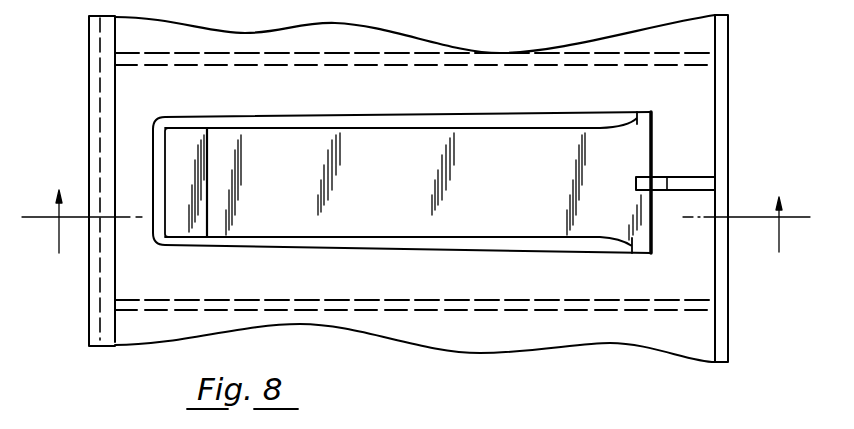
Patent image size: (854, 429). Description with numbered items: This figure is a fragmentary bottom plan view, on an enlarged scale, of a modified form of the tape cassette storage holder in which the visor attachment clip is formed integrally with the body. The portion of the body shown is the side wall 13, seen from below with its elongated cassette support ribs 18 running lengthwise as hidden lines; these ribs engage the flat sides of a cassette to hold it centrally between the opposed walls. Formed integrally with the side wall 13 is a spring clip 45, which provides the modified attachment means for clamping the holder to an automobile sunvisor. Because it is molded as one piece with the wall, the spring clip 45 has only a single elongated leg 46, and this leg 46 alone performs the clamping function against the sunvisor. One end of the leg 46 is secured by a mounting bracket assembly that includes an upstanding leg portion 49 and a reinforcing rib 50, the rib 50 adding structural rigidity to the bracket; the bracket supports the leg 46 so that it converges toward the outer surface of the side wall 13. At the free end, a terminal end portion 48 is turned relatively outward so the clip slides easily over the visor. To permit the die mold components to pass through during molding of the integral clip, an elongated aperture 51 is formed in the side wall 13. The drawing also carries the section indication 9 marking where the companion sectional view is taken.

The section line 9- 9 is at (416, 221).
The side wall 13 is at (409, 333).
The elongated cassette support ribs 18 is at (543, 67).
The spring clip 45 is at (448, 127).
The elongated leg 46 is at (314, 153).
The terminal end portion 48 is at (190, 142).
The upstanding leg portion 49 is at (646, 140).
The reinforcing rib 50 is at (684, 177).
The elongated aperture 51 is at (444, 242).